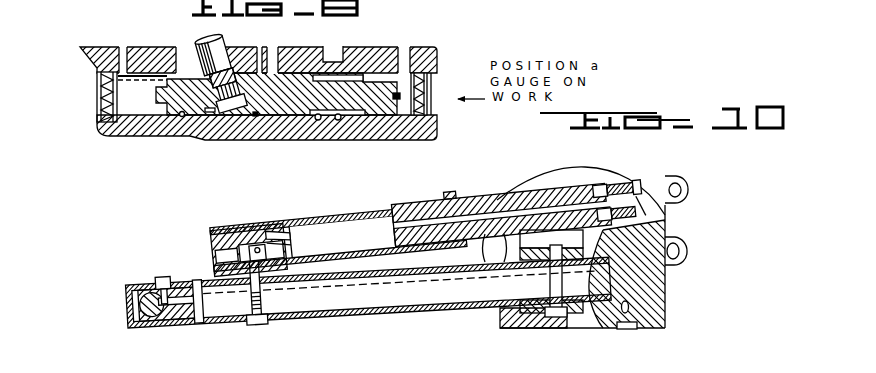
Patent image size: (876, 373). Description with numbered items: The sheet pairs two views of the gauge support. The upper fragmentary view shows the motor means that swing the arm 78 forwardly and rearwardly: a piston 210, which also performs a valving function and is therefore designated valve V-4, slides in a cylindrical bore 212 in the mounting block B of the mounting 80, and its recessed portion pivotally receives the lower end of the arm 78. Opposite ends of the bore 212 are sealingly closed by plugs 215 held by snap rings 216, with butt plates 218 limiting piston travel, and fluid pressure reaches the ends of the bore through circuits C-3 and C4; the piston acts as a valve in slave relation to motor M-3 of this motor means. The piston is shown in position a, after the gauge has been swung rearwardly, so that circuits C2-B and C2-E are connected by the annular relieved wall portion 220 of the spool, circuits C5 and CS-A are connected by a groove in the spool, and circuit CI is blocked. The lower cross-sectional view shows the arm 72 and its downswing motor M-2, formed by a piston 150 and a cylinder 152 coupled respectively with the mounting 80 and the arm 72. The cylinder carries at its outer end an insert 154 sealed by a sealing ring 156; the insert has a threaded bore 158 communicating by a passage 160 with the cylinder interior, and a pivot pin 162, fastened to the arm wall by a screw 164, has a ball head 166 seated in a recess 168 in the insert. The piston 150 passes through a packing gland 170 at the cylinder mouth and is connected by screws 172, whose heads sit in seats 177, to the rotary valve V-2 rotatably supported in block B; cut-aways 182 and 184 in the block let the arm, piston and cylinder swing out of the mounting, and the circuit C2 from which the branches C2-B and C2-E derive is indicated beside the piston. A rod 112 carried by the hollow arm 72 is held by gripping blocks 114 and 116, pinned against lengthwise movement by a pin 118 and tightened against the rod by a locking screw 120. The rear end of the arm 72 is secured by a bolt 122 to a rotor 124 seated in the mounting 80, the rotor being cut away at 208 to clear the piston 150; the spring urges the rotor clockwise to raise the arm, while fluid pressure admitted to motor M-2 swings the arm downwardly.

In FIG. 9, the circuit C3 C-3 is at (124, 56).
In FIG. 9, the arm 78 is at (203, 44).
In FIG. 9, the circuit C5-A CS-A is at (260, 56).
In FIG. 9, the circuit C1 CI is at (281, 57).
In FIG. 9, the annular relieved wall portion 220 is at (345, 60).
In FIG. 9, the circuit C4 is at (404, 60).
In FIG. 9, the plugs 215 is at (433, 78).
In FIG. 9, the snap rings 216 is at (434, 114).
In FIG. 9, the butt plates 218 is at (118, 97).
In FIG. 9, the mounting 80 is at (97, 130).
In FIG. 10, the mounting 80 is at (669, 329).
In FIG. 9, the motor M-3 is at (142, 110).
In FIG. 9, the cylindrical bore 212 is at (182, 118).
In FIG. 9, the valve V-4 is at (208, 112).
In FIG. 9, the circuit C5 is at (262, 116).
In FIG. 9, the piston 210 is at (292, 104).
In FIG. 9, the circuit C2-B is at (319, 120).
In FIG. 9, the circuit C2-E is at (341, 119).
In FIG. 10, the motor M-2 is at (388, 206).
In FIG. 10, the packing gland 170 is at (453, 196).
In FIG. 10, the piston 150 is at (490, 210).
In FIG. 10, the cylinder 152 is at (352, 214).
In FIG. 10, the bar C2 is at (420, 232).
In FIG. 10, the cut-away 184 is at (548, 190).
In FIG. 10, the screws 172 is at (604, 198).
In FIG. 10, the cut-away 182 is at (616, 195).
In FIG. 10, the rotary valve V-2 is at (646, 190).
In FIG. 10, the seats 177 is at (648, 216).
In FIG. 10, the rotor cut-away 208 is at (568, 240).
In FIG. 10, the mounting block B is at (607, 320).
In FIG. 10, the bolt 122 is at (558, 318).
In FIG. 10, the rotor 124 is at (530, 329).
In FIG. 10, the arm 72 is at (392, 312).
In FIG. 10, the rod 112 is at (150, 305).
In FIG. 10, the locking screw 120 is at (163, 282).
In FIG. 10, the gripping block 114 is at (186, 289).
In FIG. 10, the gripping block 116 is at (185, 323).
In FIG. 10, the pin 118 is at (201, 325).
In FIG. 10, the pivot pin 162 is at (253, 300).
In FIG. 10, the screw 164 is at (264, 328).
In FIG. 10, the threaded bore 158 is at (218, 250).
In FIG. 10, the insert 154 is at (228, 238).
In FIG. 10, the passage 160 is at (254, 240).
In FIG. 10, the sealing ring 156 is at (276, 232).
In FIG. 10, the ball head 166 is at (292, 236).
In FIG. 10, the recess 168 is at (288, 258).